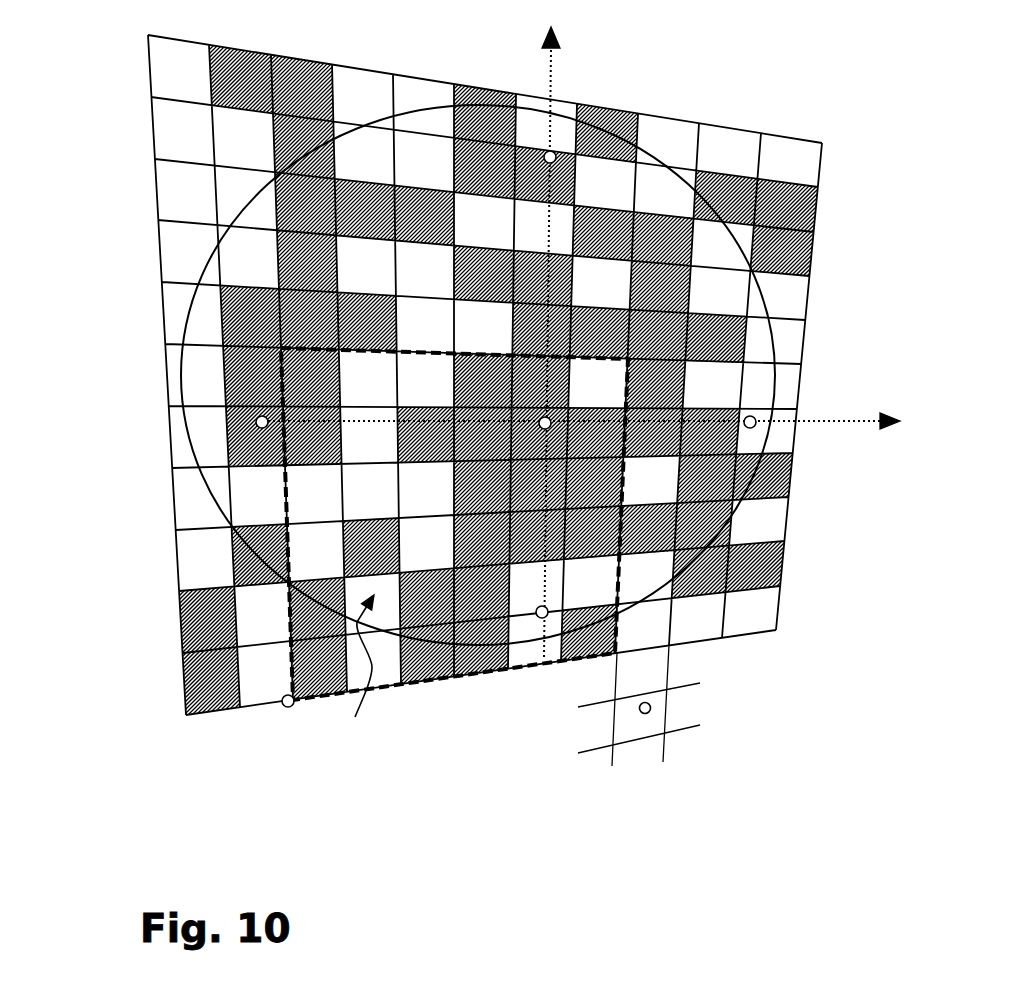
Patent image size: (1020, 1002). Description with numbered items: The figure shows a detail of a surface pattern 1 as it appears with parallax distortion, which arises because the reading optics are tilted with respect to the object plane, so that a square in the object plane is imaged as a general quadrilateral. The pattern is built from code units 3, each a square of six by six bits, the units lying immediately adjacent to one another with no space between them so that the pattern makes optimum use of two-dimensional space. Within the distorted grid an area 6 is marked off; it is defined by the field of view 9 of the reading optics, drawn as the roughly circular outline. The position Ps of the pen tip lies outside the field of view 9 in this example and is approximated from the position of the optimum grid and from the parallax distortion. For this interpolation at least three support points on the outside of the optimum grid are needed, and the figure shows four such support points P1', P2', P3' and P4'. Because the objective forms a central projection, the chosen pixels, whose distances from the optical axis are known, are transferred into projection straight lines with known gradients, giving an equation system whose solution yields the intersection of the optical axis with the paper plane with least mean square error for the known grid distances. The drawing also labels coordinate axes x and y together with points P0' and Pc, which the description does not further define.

The surface pattern 1 is at (178, 570).
The code unit 3 is at (182, 620).
The area 6 is at (358, 676).
The field of view 9 is at (438, 682).
The x axis x is at (857, 428).
The y axis y is at (553, 70).
The corner point Pc is at (283, 706).
The position of the pen tip Ps is at (643, 716).
The center point P0' is at (730, 337).
The support point P1' is at (842, 393).
The support point P2' is at (686, 94).
The support point P3' is at (150, 415).
The support point P4' is at (517, 707).